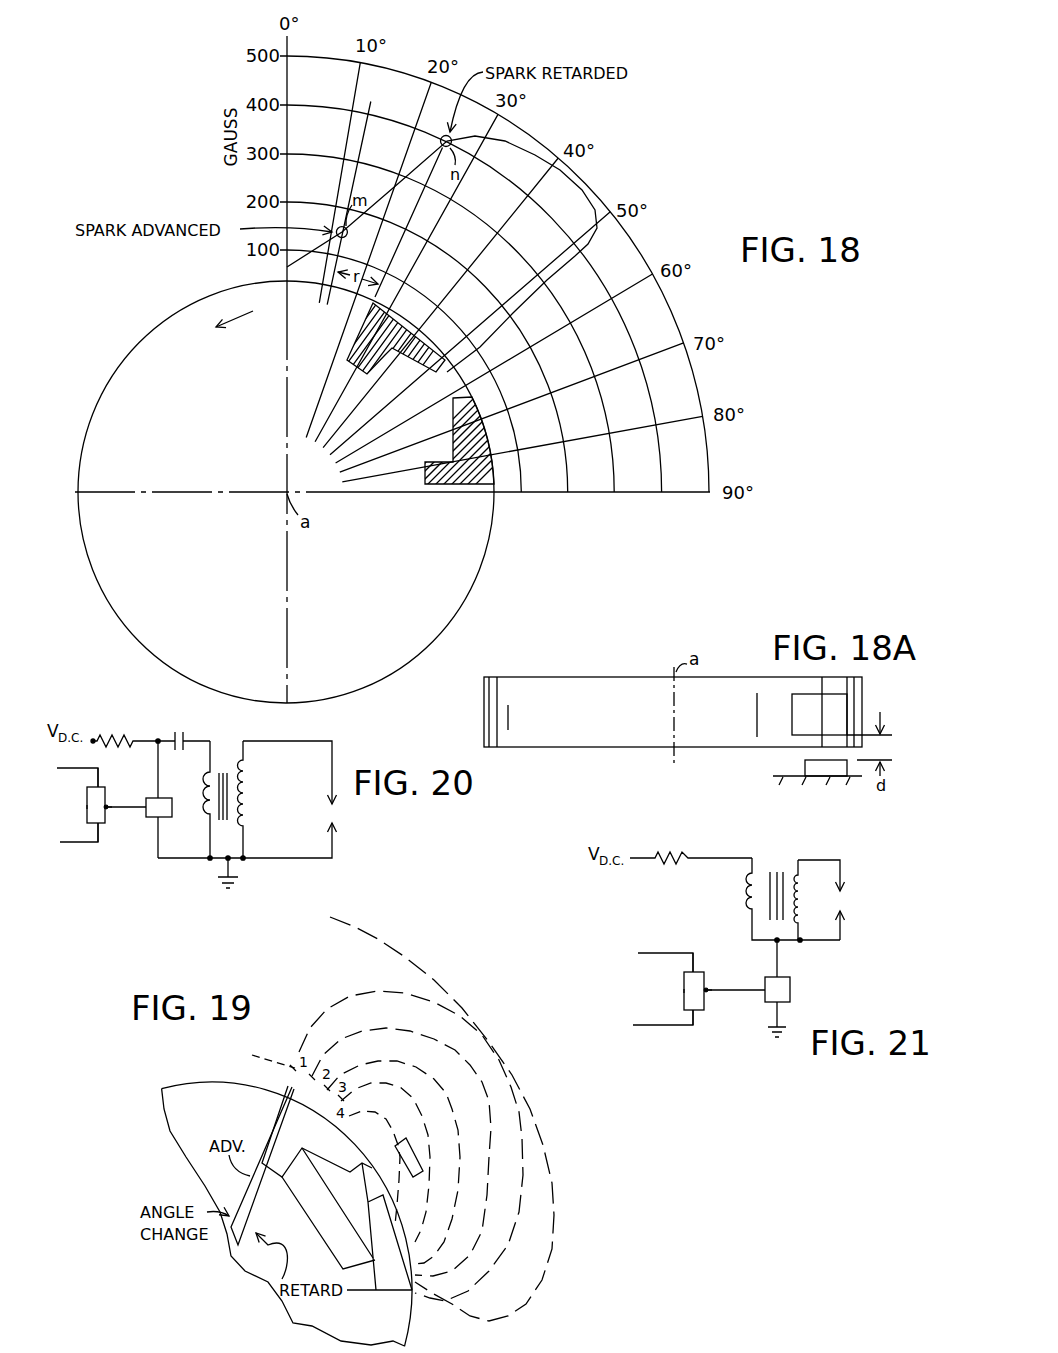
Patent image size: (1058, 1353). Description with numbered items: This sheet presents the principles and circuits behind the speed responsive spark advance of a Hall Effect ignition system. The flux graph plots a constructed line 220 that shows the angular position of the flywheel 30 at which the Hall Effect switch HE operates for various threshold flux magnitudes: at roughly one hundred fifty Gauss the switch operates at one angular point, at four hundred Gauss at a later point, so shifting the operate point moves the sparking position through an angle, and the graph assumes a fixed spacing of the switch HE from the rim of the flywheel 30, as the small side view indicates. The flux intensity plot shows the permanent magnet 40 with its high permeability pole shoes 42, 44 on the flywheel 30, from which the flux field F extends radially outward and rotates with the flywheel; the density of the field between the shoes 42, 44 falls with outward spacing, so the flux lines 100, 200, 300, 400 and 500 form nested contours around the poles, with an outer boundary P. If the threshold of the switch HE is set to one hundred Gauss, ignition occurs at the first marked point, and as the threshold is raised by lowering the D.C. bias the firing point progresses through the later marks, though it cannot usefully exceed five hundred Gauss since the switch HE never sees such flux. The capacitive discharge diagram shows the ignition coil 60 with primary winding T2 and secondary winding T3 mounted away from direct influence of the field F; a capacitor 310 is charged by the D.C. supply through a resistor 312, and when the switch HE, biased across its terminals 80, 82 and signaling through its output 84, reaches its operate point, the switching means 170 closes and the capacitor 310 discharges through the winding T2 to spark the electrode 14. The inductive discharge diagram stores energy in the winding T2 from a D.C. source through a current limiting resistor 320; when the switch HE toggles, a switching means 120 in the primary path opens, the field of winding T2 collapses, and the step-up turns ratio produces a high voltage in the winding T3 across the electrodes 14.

In FIG. 20, the electrode 14 is at (336, 816).
In FIG. 21, the electrode 14 is at (842, 904).
In FIG. 18, the flywheel 30 is at (481, 575).
In FIG. 18A, the flywheel 30 is at (592, 675).
In FIG. 19, the flywheel 30 is at (214, 1080).
In FIG. 19, the permanent magnet 40 is at (320, 1218).
In FIG. 18, the magnetic pole shoe 42 is at (398, 350).
In FIG. 19, the magnetic pole shoe 42 is at (328, 1155).
In FIG. 18, the magnetic pole shoe 44 is at (465, 484).
In FIG. 18A, the magnetic pole shoe 44 is at (850, 713).
In FIG. 19, the magnetic pole shoe 44 is at (375, 1291).
In FIG. 20, the ignition coil 60 is at (248, 788).
In FIG. 21, the ignition coil 60 is at (780, 884).
In FIG. 20, the positive terminal 80 is at (99, 787).
In FIG. 21, the positive terminal 80 is at (694, 972).
In FIG. 20, the negative terminal 82 is at (95, 832).
In FIG. 21, the negative terminal 82 is at (694, 1011).
In FIG. 20, the controlled output terminal 84 is at (108, 801).
In FIG. 21, the controlled output terminal 84 is at (707, 989).
In FIG. 19, the 100 Gauss flux line 100 is at (486, 1042).
In FIG. 21, the switching circuit 120 is at (791, 989).
In FIG. 20, the switching means 170 is at (165, 818).
In FIG. 19, the 200 Gauss flux line 200 is at (494, 1135).
In FIG. 18, the constructed line 220 is at (534, 158).
In FIG. 19, the 300 Gauss flux line 300 is at (470, 1152).
In FIG. 20, the capacitor 310 is at (181, 736).
In FIG. 20, the resistor 312 is at (116, 738).
In FIG. 21, the resistor 320 is at (662, 856).
In FIG. 19, the 400 Gauss flux line 400 is at (428, 1124).
In FIG. 19, the 500 Gauss flux line 500 is at (370, 1168).
In FIG. 18A, the Hall Effect switch HE is at (818, 778).
In FIG. 20, the Hall Effect switch HE is at (106, 817).
In FIG. 21, the Hall Effect switch HE is at (706, 1003).
In FIG. 19, the Hall Effect switch HE is at (423, 1160).
In FIG. 20, the flux field F is at (82, 806).
In FIG. 21, the flux field F is at (680, 993).
In FIG. 19, the flux field F is at (539, 1107).
In FIG. 19, the flux boundary P is at (353, 921).
In FIG. 20, the primary winding T2 is at (211, 789).
In FIG. 21, the primary winding T2 is at (746, 888).
In FIG. 20, the secondary winding T3 is at (249, 790).
In FIG. 21, the secondary winding T3 is at (804, 887).